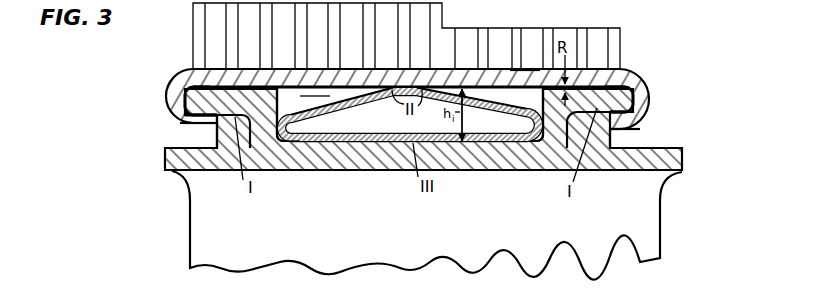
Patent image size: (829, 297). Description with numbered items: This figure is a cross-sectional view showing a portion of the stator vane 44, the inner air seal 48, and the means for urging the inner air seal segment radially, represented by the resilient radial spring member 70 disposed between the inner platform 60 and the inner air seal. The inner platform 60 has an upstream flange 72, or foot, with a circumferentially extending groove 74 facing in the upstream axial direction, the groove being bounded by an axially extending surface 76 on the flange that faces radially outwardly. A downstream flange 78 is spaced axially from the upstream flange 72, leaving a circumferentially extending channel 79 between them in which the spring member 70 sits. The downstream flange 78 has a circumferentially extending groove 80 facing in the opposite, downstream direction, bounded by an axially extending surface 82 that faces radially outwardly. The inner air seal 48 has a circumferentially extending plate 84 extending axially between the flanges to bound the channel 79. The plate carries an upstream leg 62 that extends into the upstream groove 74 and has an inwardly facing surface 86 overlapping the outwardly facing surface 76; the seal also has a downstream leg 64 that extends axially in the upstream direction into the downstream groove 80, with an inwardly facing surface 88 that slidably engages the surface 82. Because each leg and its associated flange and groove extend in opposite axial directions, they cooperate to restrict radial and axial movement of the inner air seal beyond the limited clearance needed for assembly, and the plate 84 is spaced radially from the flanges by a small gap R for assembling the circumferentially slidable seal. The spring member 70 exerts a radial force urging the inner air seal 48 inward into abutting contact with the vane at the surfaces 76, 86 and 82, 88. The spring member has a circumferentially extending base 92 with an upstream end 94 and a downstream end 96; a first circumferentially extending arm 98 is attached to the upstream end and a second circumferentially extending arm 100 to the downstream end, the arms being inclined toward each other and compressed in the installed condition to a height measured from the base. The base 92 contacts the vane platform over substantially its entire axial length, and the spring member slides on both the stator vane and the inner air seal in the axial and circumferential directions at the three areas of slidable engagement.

The stator vane 44 is at (669, 213).
The inner air seal 48 is at (623, 42).
The inner platform 60 is at (683, 158).
The upstream leg 62 is at (172, 88).
The downstream leg 64 is at (646, 95).
The resilient radial spring member 70 is at (324, 97).
The upstream flange 72 is at (213, 93).
The circumferentially extending groove 74 is at (208, 143).
The axially extending surface 76 is at (197, 123).
The downstream flange 78 is at (608, 97).
The circumferentially extending channel 79 is at (522, 84).
The circumferentially extending groove 80 is at (608, 140).
The axially extending surface 82 is at (637, 117).
The plate 84 is at (358, 78).
The inwardly facing surface 86 is at (217, 125).
The inwardly facing surface 88 is at (593, 110).
The base 92 is at (395, 133).
The upstream end 94 is at (305, 136).
The downstream end 96 is at (522, 108).
The first circumferentially extending arm 98 is at (361, 94).
The second circumferentially extending arm 100 is at (468, 105).